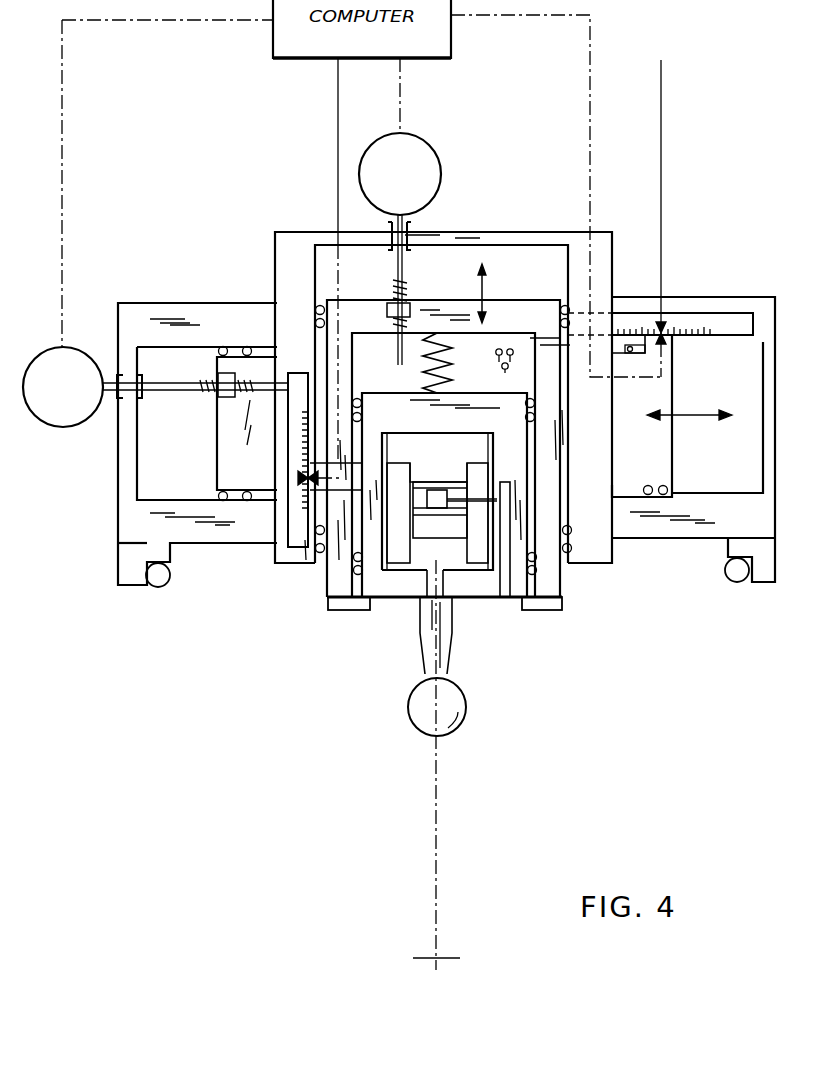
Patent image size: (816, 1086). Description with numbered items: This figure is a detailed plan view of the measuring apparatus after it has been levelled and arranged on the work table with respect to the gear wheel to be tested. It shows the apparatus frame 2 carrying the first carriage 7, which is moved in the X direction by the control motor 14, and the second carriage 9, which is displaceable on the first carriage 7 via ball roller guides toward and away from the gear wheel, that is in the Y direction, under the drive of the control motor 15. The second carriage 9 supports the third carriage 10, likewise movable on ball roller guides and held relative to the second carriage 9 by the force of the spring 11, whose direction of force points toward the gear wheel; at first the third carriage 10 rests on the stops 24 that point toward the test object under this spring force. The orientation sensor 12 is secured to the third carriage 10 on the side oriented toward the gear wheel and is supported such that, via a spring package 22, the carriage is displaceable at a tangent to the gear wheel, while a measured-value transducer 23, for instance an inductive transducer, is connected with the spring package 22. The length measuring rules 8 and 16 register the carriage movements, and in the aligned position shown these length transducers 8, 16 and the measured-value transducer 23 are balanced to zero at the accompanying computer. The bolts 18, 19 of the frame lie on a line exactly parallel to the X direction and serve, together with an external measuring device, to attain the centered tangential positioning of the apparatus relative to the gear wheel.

The apparatus frame 2 is at (170, 318).
The first carriage 7 is at (300, 237).
The length measuring rule 8 is at (728, 318).
The second carriage 9 is at (532, 308).
The third carriage 10 is at (516, 468).
The spring 11 is at (448, 382).
The orientation sensor 12 is at (455, 720).
The control motor 14 is at (72, 352).
The control motor 15 is at (378, 145).
The length measuring rule 16 is at (298, 373).
The bolt 18 is at (733, 579).
The bolt 19 is at (165, 578).
The spring package 22 is at (407, 547).
The measured-value transducer 23 is at (436, 486).
The stops 24 is at (342, 605).